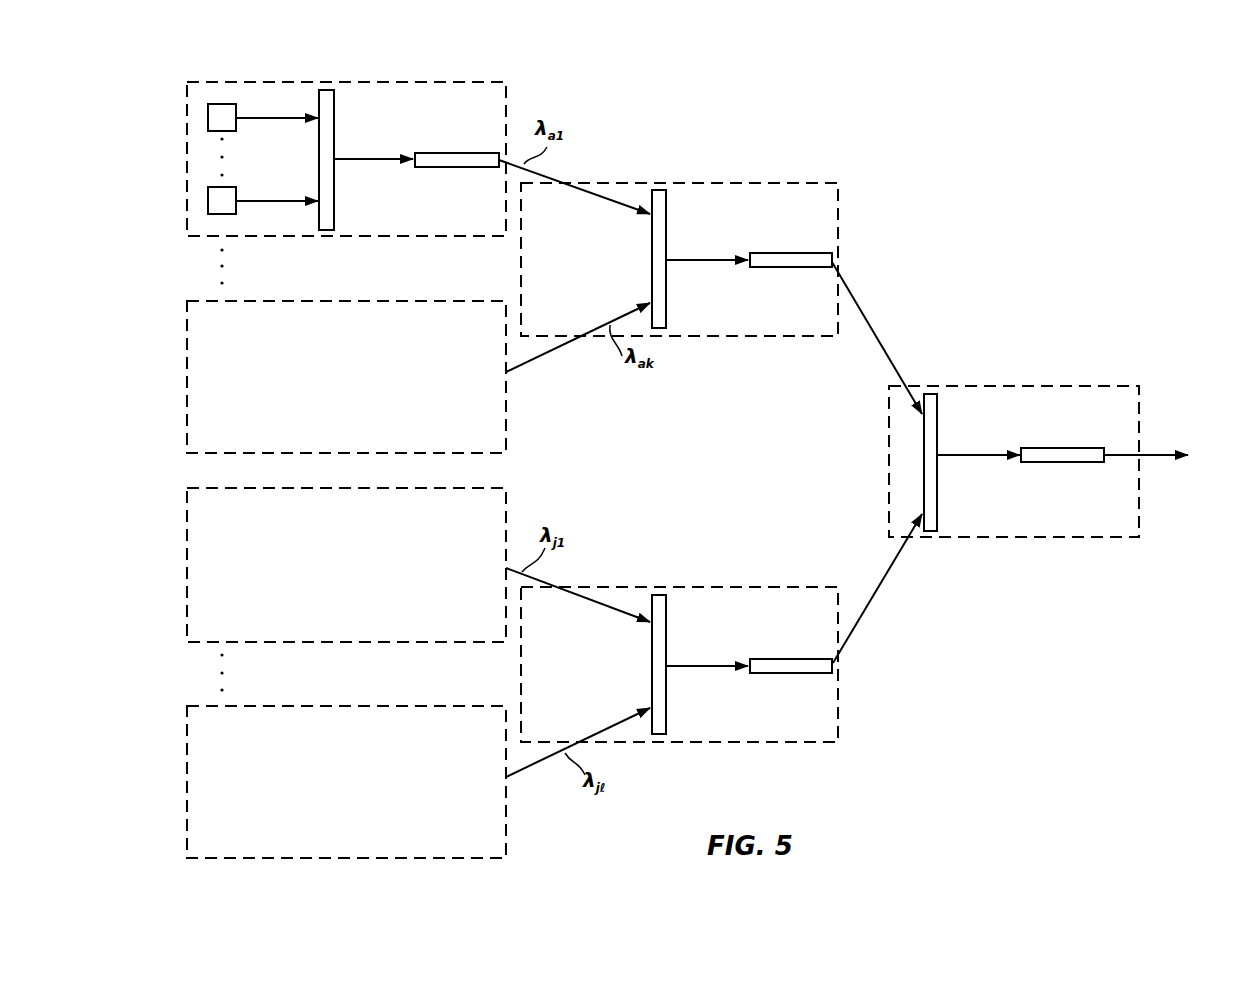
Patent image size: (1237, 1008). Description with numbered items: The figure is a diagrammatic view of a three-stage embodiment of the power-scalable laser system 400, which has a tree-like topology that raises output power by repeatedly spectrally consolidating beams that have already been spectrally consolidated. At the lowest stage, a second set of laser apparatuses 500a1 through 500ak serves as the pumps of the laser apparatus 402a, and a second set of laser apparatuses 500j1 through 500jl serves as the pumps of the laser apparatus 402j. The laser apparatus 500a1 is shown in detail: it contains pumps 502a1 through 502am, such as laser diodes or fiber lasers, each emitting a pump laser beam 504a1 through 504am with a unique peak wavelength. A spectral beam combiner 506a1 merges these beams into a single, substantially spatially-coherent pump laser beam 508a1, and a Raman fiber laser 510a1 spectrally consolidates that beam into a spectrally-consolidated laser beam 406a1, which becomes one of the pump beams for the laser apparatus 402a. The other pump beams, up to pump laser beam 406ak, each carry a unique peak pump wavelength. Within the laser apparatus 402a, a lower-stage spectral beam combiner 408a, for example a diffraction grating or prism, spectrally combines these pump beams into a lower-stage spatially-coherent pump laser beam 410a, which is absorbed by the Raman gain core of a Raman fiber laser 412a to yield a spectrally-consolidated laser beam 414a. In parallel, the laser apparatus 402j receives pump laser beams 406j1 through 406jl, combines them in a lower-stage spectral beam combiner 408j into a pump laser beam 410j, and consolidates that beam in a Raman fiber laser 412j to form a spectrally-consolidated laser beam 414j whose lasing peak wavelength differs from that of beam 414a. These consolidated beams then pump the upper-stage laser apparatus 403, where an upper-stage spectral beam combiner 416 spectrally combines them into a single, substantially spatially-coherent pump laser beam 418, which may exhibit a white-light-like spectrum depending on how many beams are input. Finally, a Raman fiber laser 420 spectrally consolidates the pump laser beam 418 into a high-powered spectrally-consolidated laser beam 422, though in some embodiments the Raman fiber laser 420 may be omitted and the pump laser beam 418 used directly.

The laser system 400 is at (981, 155).
The laser apparatus 402a is at (838, 210).
The laser apparatus 402j is at (838, 698).
The laser apparatus 403 is at (1037, 386).
The pump laser beam 406a1 is at (580, 185).
The pump laser beam 406ak is at (562, 347).
The pump laser beam 406j1 is at (578, 590).
The pump laser beam 406jl is at (608, 730).
The lower-stage spectral beam combiner 408a is at (660, 200).
The lower-stage spectral beam combiner 408j is at (660, 608).
The pump laser beam 410a is at (698, 259).
The pump laser beam 410j is at (698, 665).
The Raman fiber laser 412a is at (778, 262).
The Raman fiber laser 412j is at (778, 668).
The spectrally-consolidated laser beam 414a is at (875, 330).
The spectrally-consolidated laser beam 414j is at (875, 593).
The upper-stage spectral beam combiner 416 is at (930, 405).
The pump laser beam 418 is at (968, 453).
The Raman fiber laser 420 is at (1063, 455).
The spectrally-consolidated laser beam 422 is at (1155, 455).
The laser apparatus 500a1 is at (506, 94).
The laser apparatus 500ak is at (506, 410).
The laser apparatus 500j1 is at (506, 500).
The laser apparatus 500jl is at (506, 815).
The pump 502a1 is at (221, 112).
The pump 502am is at (222, 200).
The pump laser beam 504a1 is at (277, 118).
The pump laser beam 504am is at (258, 200).
The spectral beam combiner 506a1 is at (323, 107).
The pump laser beam 508a1 is at (360, 159).
The Raman fiber laser 510a1 is at (447, 159).